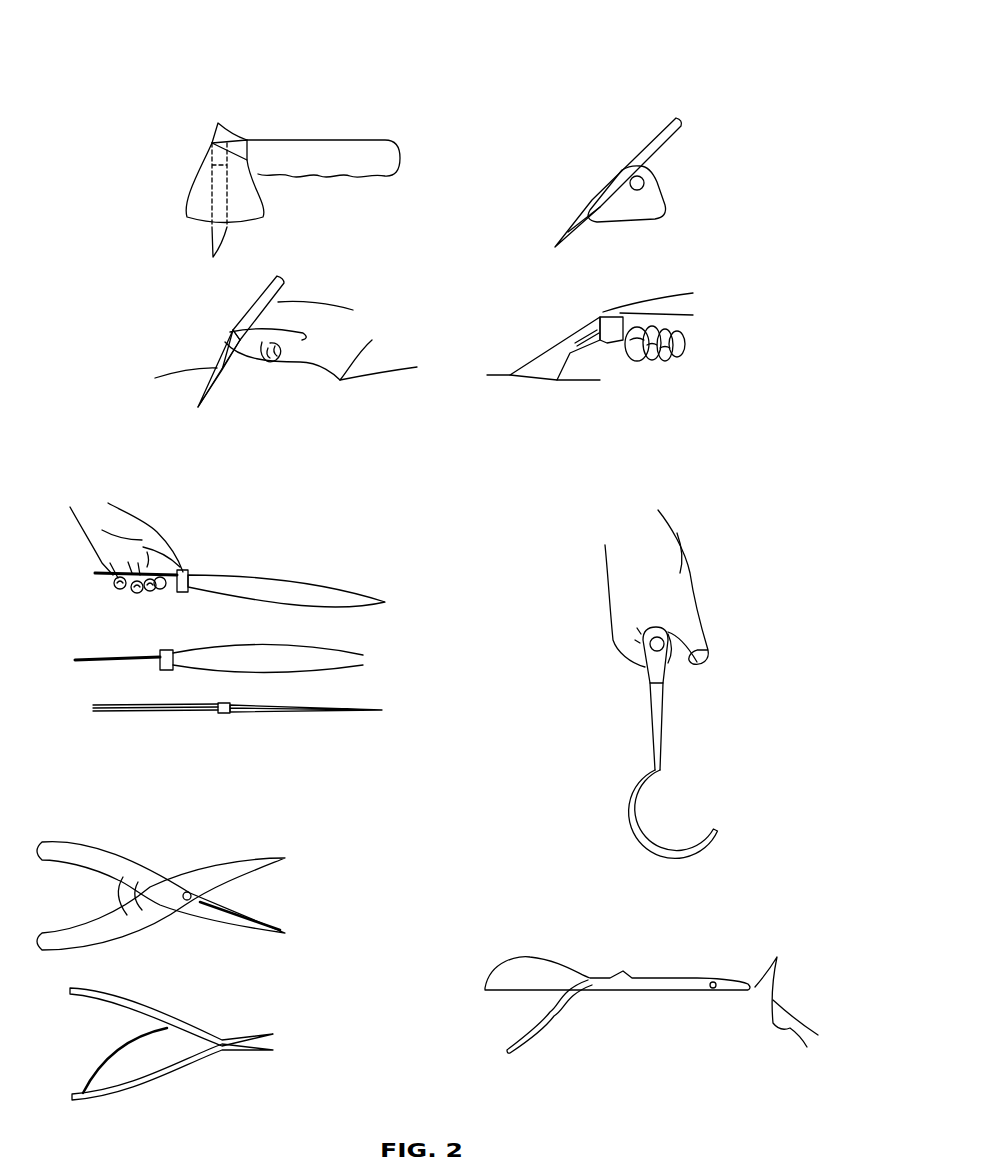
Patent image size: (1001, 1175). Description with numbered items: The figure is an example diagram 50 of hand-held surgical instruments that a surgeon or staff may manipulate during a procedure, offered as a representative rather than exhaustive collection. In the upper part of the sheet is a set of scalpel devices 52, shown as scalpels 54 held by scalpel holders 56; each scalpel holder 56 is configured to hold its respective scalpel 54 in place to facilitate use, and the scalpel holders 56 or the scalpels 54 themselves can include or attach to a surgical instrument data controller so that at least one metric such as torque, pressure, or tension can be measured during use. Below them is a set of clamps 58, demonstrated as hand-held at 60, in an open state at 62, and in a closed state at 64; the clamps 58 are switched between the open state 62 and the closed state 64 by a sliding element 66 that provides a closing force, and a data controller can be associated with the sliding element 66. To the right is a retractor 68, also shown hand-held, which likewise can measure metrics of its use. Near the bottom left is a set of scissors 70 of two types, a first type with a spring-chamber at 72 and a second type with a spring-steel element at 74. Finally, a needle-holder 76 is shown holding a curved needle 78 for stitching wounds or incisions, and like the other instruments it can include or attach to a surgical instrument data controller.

The diagram 50 is at (782, 43).
The set of scalpel devices 52 is at (160, 103).
The scalpel 54 is at (210, 247).
The scalpel holder 56 is at (323, 138).
The set of clamps 58 is at (372, 517).
The hand-held clamp 60 is at (393, 585).
The open state 62 is at (378, 652).
The closed state 64 is at (393, 700).
The sliding element 66 is at (208, 485).
The retractor 68 is at (737, 543).
The set of scissors 70 is at (353, 847).
The scissors with spring-chamber 72 is at (263, 832).
The scissors with spring-steel element 74 is at (263, 1010).
The needle-holder 76 is at (512, 937).
The curved needle 78 is at (765, 987).